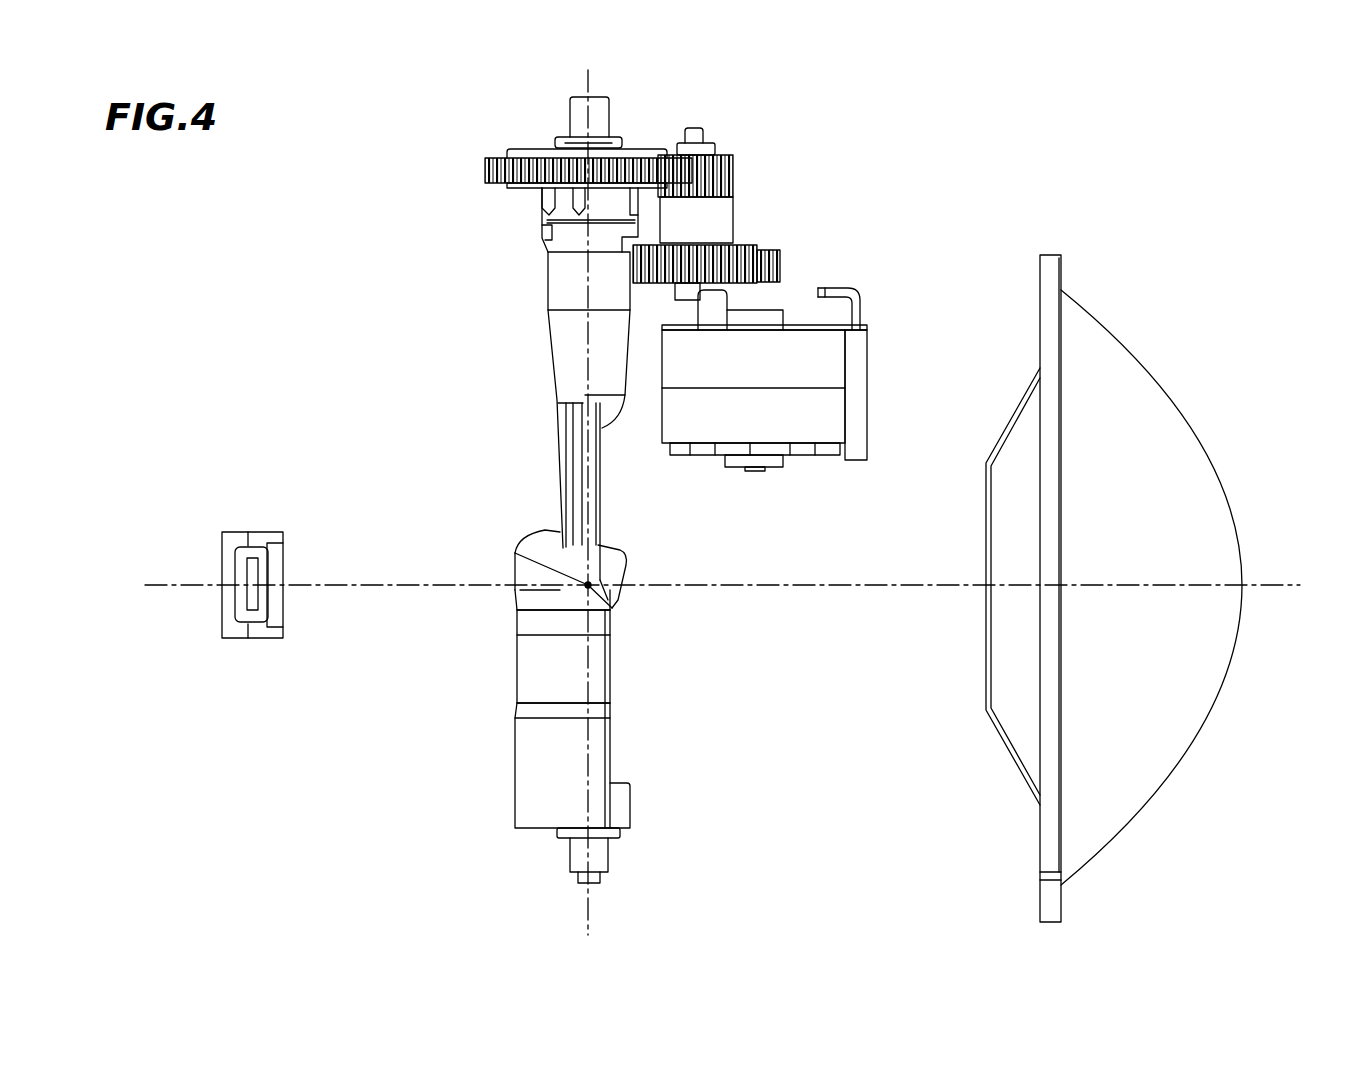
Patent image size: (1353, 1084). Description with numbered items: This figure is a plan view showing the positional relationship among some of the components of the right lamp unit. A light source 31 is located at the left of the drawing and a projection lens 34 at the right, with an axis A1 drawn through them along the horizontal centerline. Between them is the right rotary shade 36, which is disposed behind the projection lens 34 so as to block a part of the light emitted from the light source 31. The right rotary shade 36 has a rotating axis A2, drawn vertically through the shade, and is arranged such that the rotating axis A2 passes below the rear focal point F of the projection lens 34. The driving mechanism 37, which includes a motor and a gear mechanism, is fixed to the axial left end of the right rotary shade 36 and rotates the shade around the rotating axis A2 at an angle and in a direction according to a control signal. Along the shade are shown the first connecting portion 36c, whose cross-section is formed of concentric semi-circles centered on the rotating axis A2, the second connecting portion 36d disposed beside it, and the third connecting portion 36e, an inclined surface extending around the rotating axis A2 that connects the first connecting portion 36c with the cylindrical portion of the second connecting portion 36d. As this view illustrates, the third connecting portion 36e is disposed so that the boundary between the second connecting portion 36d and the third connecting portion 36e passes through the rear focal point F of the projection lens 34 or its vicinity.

The light source 31 is at (232, 540).
The projection lens 34 is at (1193, 753).
The right rotary shade 36 is at (500, 787).
The first connecting portion 36c is at (533, 675).
The second connecting portion 36d is at (527, 577).
The third connecting portion 36e is at (527, 600).
The driving mechanism 37 is at (803, 262).
The rear focal point F is at (610, 592).
The optical axis A1 is at (925, 590).
The rotating axis A2 is at (590, 920).